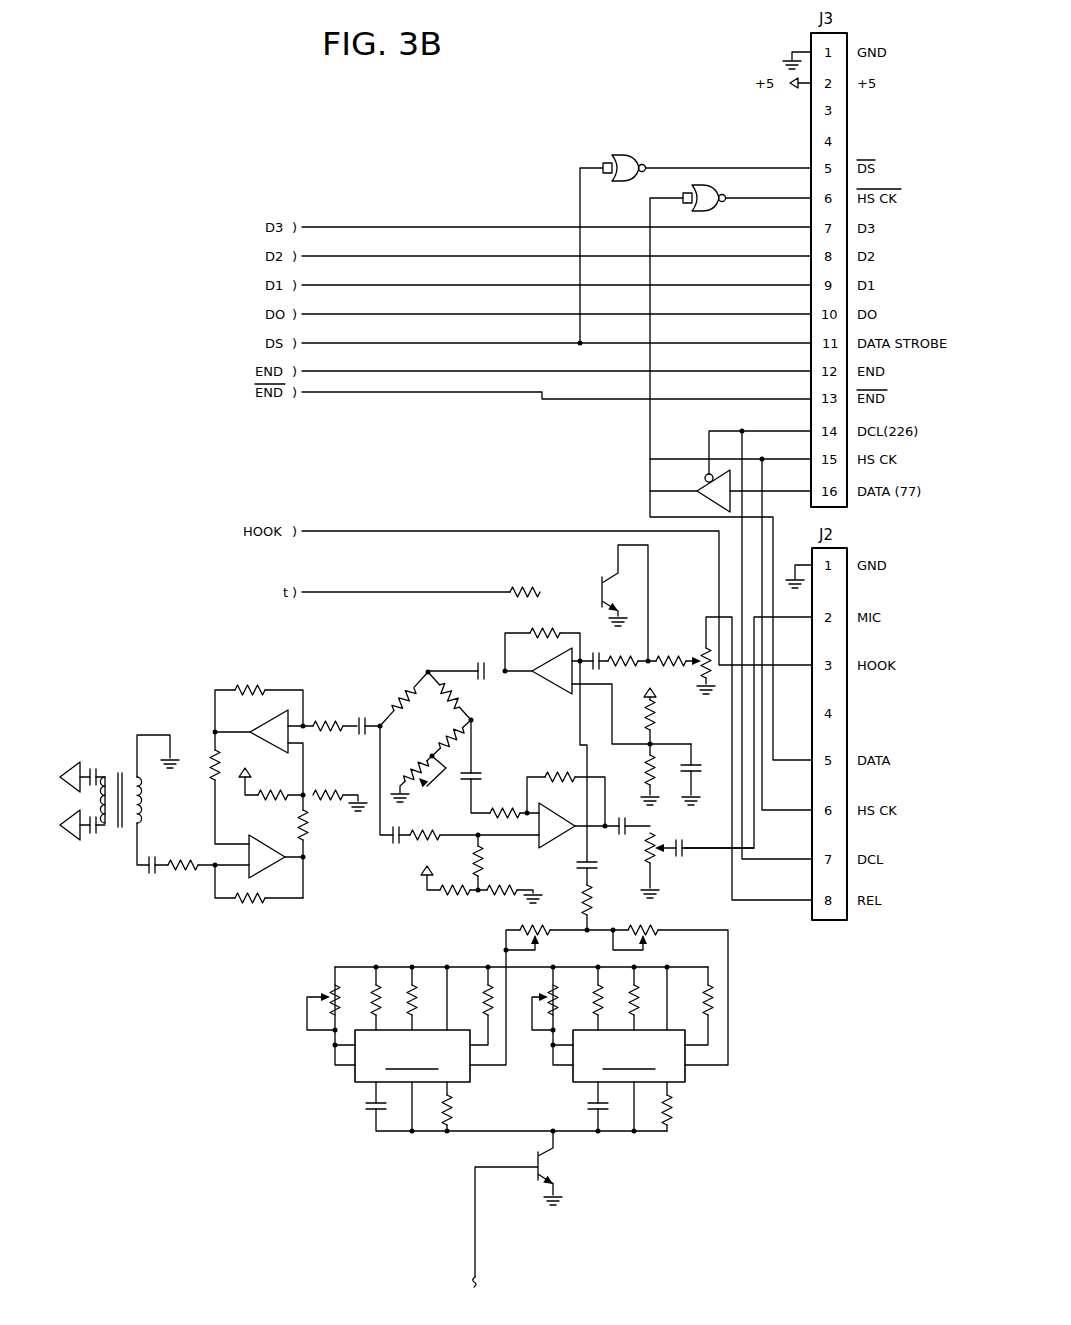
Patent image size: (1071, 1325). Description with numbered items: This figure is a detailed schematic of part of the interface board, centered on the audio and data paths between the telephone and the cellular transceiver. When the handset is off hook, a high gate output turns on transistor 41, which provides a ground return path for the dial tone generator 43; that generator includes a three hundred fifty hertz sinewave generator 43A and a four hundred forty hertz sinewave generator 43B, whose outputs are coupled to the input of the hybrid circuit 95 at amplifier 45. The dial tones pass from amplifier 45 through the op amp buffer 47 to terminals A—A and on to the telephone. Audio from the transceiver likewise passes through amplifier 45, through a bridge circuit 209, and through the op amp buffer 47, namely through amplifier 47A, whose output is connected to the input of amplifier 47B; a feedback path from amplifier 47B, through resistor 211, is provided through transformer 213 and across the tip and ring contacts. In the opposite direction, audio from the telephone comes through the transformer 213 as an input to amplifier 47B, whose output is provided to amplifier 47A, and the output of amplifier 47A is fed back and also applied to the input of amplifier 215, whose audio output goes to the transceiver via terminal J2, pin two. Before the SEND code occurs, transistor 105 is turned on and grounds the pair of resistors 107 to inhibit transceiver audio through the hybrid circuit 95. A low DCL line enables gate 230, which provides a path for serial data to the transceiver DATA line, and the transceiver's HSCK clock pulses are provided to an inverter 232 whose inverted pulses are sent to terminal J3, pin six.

The inverter 232 is at (710, 190).
The gate 230 is at (697, 480).
The transistor 105 is at (600, 581).
The pair of resistors 107 is at (680, 662).
The hybrid circuit 95 is at (416, 715).
The bridge circuit 209 is at (430, 749).
The amplifier 45 is at (552, 684).
The amplifier 215 is at (556, 848).
The op amp buffer 47 is at (220, 807).
The amplifier 47A is at (276, 714).
The amplifier 47B is at (300, 871).
The resistor 211 is at (244, 906).
The transformer 213 is at (118, 862).
The dial tone generator 43 is at (517, 1064).
The sinewave generator 43A is at (487, 1049).
The sinewave generator 43B is at (622, 1049).
The transistor 41 is at (539, 1189).